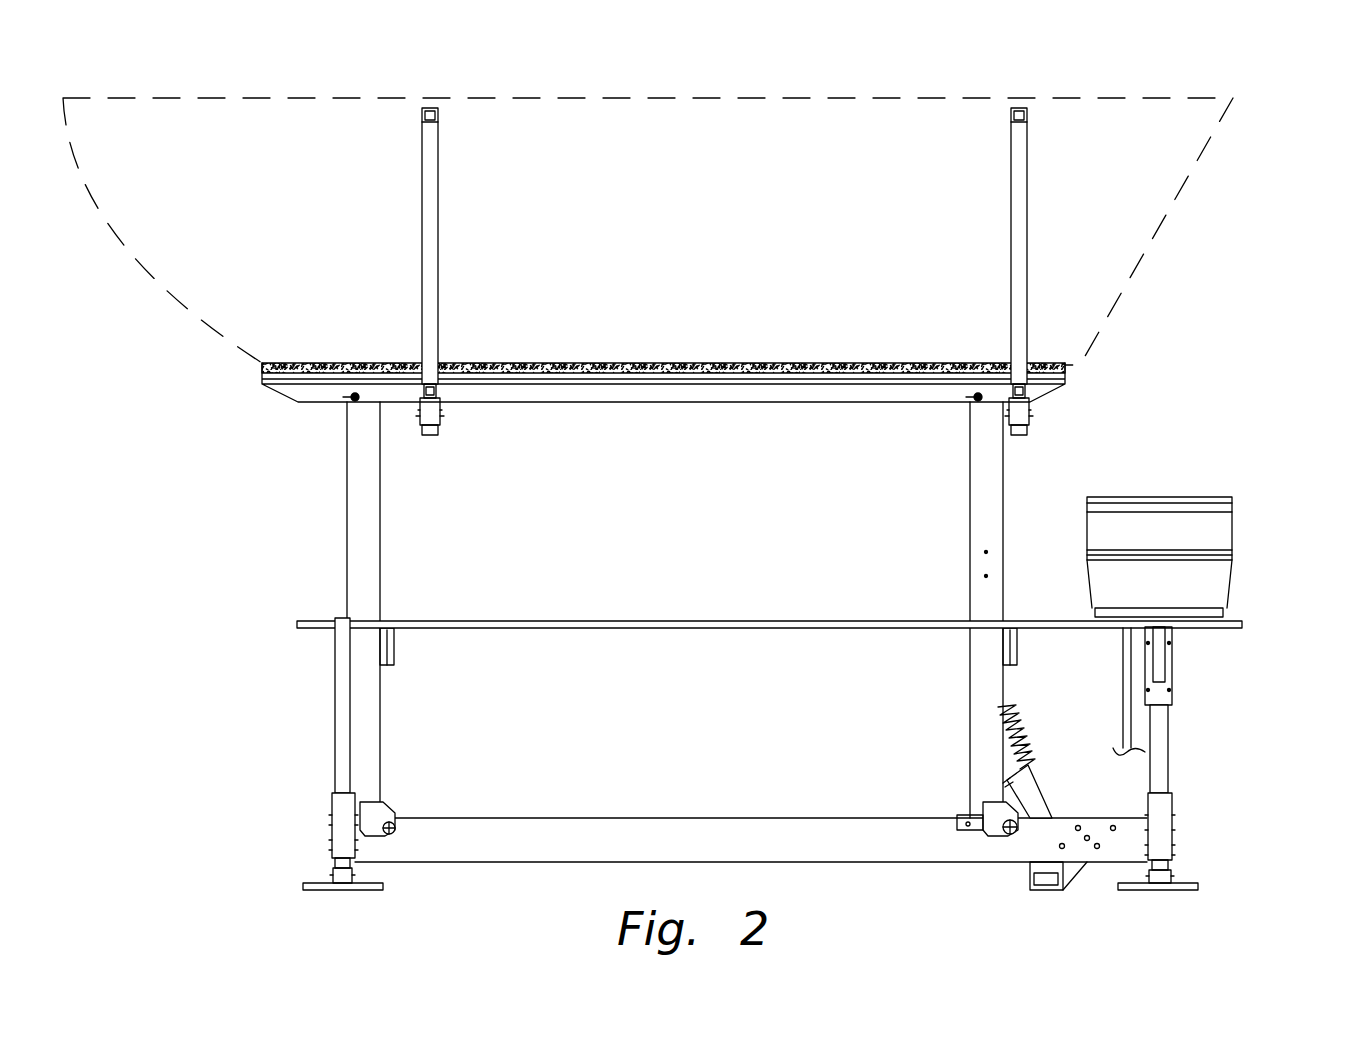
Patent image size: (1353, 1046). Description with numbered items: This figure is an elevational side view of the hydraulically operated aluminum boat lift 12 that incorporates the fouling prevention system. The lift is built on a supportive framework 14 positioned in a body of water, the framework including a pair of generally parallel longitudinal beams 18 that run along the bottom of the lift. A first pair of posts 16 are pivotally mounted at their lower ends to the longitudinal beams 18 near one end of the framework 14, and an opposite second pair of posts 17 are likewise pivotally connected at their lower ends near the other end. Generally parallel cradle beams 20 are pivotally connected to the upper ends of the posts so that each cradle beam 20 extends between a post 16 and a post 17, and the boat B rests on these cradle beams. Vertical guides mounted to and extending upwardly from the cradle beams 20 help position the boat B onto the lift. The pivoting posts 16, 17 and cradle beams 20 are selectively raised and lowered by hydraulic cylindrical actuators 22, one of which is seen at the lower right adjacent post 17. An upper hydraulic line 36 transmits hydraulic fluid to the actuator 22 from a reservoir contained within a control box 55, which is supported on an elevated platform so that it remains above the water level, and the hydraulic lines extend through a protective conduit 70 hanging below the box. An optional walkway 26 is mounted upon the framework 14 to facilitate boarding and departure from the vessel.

The boat B is at (638, 98).
The boat lift 12 is at (290, 521).
The supportive framework 14 is at (330, 800).
The first pair of posts 16 is at (380, 540).
The second pair of posts 17 is at (965, 503).
The longitudinal beams 18 is at (475, 818).
The cradle beams 20 is at (593, 365).
The hydraulic cylindrical actuator 22 is at (1043, 795).
The walkway 26 is at (672, 620).
The upper hydraulic line 36 is at (1005, 790).
The control box 55 is at (1232, 538).
The protective conduit 70 is at (1122, 662).